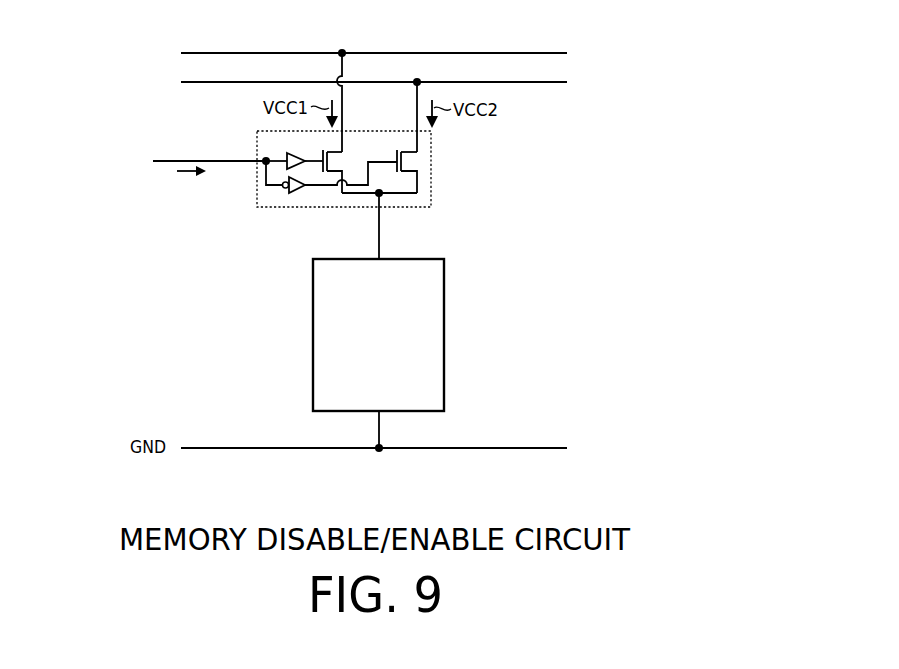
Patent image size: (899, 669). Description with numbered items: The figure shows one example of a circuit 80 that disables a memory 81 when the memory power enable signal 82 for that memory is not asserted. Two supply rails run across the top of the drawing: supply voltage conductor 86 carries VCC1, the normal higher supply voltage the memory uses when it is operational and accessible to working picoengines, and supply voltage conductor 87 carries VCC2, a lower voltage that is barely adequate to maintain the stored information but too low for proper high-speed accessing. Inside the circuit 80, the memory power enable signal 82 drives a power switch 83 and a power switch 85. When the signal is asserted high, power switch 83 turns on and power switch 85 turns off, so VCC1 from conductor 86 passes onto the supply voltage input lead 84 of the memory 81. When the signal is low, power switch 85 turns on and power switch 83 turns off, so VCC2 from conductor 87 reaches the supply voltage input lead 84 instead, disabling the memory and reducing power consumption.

The circuit 80 is at (274, 208).
The memory 81 is at (391, 356).
The memory power enable signal 82 is at (186, 173).
The power switch 83 is at (322, 150).
The supply voltage input lead 84 is at (378, 254).
The power switch 85 is at (397, 151).
The supply voltage conductor 86 is at (239, 52).
The supply voltage conductor 87 is at (229, 84).